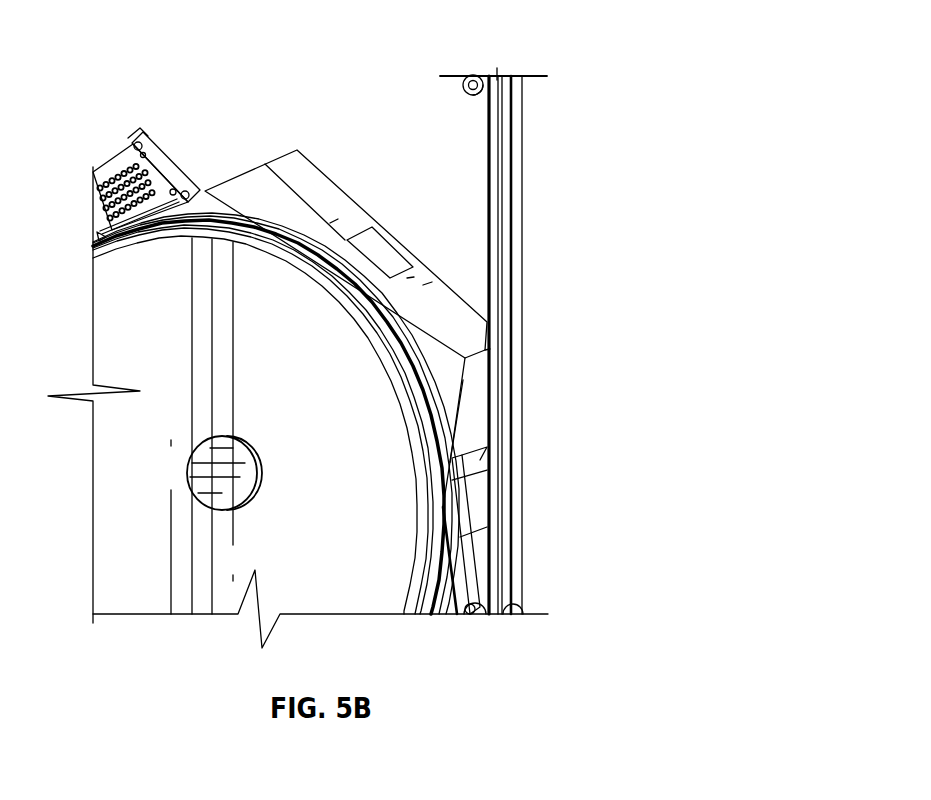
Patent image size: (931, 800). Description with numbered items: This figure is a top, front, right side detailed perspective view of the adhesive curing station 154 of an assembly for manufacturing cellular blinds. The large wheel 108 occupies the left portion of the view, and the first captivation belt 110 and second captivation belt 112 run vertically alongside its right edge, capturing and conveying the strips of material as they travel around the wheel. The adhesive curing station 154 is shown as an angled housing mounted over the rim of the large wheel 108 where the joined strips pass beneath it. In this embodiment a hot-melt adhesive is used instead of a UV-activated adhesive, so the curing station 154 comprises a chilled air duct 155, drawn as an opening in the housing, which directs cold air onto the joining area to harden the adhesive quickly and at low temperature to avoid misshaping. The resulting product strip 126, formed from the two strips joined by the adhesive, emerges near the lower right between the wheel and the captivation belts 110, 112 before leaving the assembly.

The large wheel 108 is at (339, 459).
The first captivation belt 110 is at (517, 211).
The second captivation belt 112 is at (514, 278).
The product strip 126 is at (462, 535).
The adhesive curing station 154 is at (337, 200).
The chilled air duct 155 is at (380, 254).